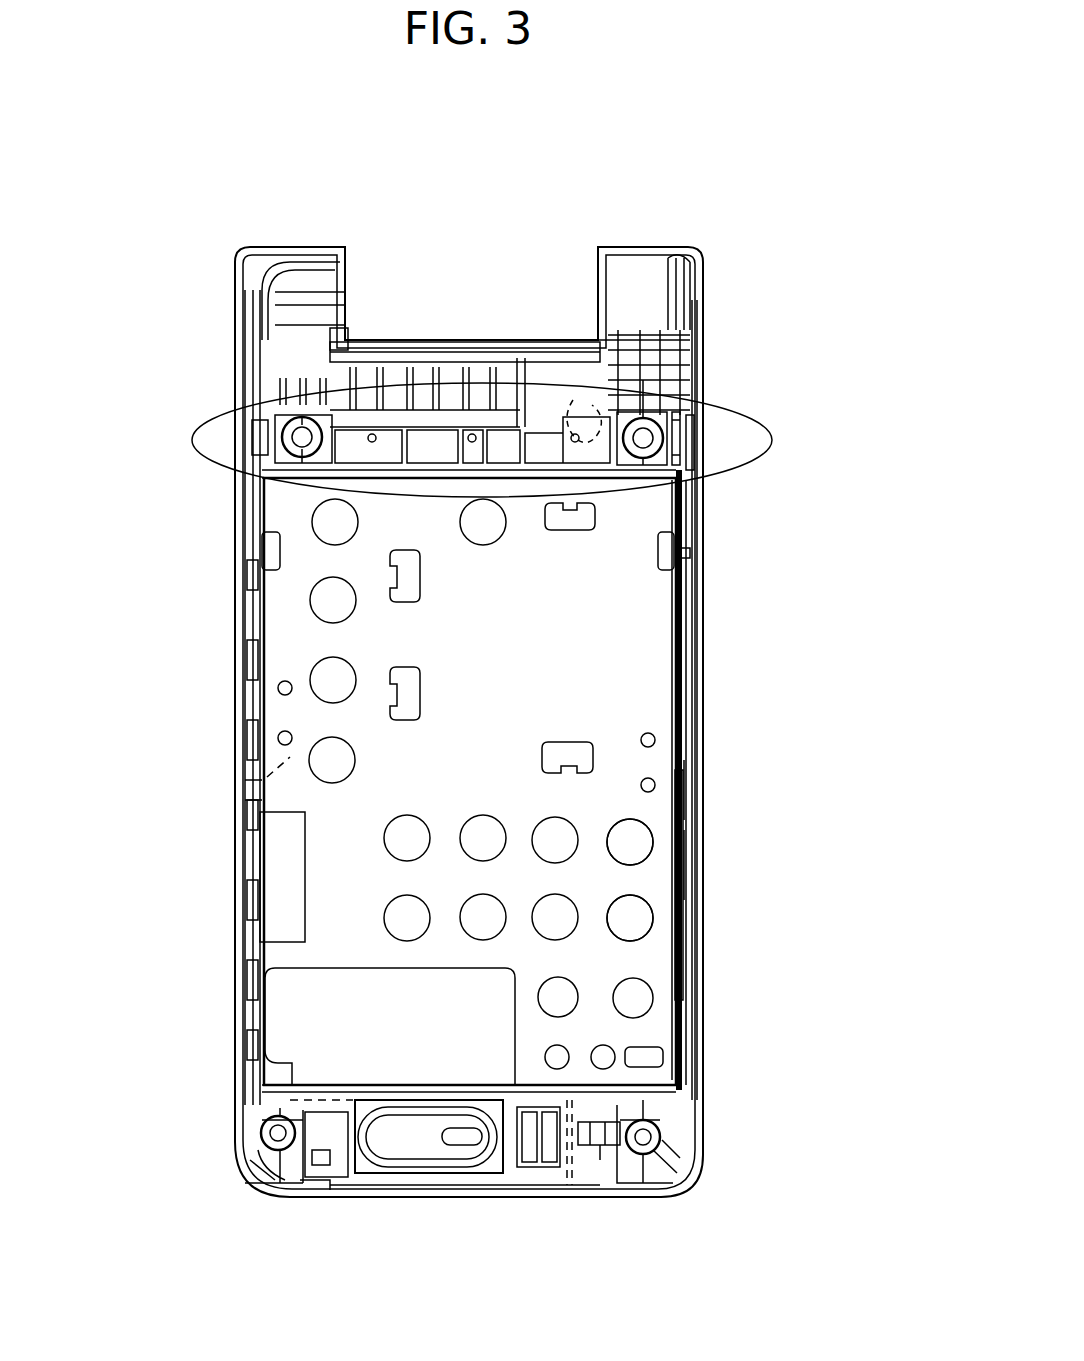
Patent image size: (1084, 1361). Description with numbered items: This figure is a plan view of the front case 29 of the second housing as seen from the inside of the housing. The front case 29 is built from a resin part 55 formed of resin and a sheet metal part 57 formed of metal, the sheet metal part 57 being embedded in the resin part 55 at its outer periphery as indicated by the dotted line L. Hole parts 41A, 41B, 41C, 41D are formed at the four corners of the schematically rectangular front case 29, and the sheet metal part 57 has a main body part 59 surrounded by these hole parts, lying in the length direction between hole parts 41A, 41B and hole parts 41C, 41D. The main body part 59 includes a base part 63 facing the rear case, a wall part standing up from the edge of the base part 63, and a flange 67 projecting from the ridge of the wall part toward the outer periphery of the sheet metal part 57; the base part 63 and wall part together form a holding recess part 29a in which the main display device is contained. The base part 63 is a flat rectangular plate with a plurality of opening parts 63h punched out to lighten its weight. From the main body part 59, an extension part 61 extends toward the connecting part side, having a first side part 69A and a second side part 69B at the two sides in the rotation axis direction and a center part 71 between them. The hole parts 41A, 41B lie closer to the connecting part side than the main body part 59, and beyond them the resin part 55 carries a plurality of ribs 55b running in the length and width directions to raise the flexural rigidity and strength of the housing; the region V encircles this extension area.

The front case 29 is at (855, 158).
The holding recess part 29a is at (265, 790).
The resin part 55 is at (641, 293).
The ribs 55b is at (690, 400).
The sheet metal part 57 is at (652, 612).
The main body part 59 is at (648, 703).
The extension part 61 is at (700, 415).
The base part 63 is at (630, 770).
The opening parts 63h is at (640, 918).
The flange 67 is at (513, 1095).
The first side part 69A is at (240, 455).
The second side part 69B is at (712, 462).
The center part 71 is at (365, 440).
The hole part 41A is at (300, 428).
The hole part 41B is at (660, 432).
The hole part 41C is at (655, 1128).
The hole part 41D is at (262, 1133).
The dotted line L is at (575, 350).
The region V is at (772, 448).